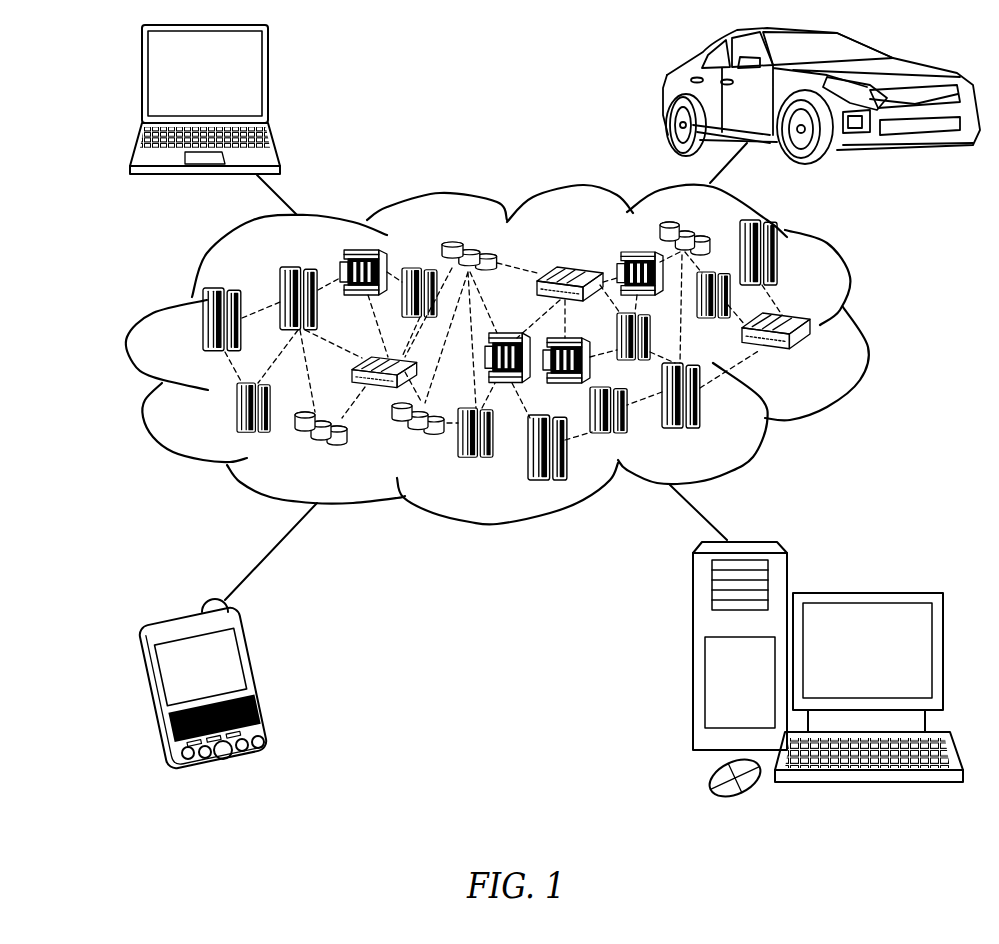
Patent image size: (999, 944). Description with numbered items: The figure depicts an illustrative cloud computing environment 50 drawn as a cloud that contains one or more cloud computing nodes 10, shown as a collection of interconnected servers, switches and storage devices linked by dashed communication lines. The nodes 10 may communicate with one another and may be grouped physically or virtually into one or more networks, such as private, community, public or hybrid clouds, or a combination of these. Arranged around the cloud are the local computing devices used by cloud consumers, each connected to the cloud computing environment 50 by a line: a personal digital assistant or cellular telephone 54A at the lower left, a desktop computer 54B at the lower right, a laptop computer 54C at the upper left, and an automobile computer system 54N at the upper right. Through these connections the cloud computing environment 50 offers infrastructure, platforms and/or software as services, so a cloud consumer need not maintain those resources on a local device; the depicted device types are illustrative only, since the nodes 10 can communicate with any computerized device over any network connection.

The cloud computing nodes 10 is at (840, 360).
The cloud computing environment 50 is at (866, 331).
The personal digital assistant (PDA) or cellular telephone 54A is at (258, 678).
The desktop computer 54B is at (865, 592).
The laptop computer 54C is at (268, 81).
The automobile computer system 54N is at (667, 96).